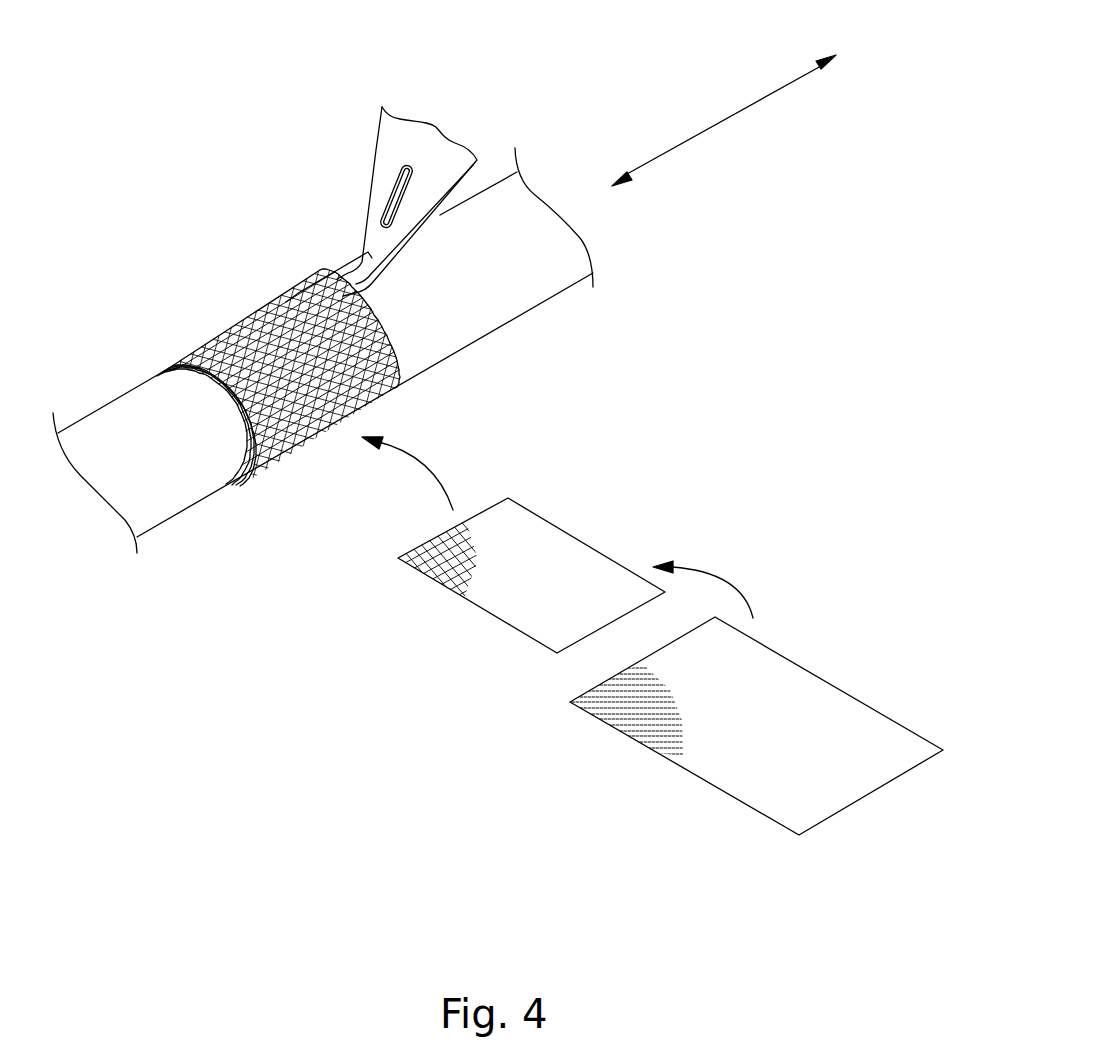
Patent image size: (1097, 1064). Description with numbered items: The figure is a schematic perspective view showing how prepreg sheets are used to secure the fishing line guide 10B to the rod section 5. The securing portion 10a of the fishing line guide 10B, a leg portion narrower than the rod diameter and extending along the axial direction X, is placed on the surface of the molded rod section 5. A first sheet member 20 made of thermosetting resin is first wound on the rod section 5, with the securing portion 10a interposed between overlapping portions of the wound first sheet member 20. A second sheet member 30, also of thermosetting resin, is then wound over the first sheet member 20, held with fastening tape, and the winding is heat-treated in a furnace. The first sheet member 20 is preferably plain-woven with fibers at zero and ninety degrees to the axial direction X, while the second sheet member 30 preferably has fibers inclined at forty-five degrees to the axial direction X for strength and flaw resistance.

The rod section 5 is at (112, 415).
The fishing line guide 10B is at (446, 113).
The securing portion 10a is at (288, 298).
The first sheet member 20 is at (568, 566).
The second sheet member 30 is at (240, 330).
The axial direction X is at (747, 107).